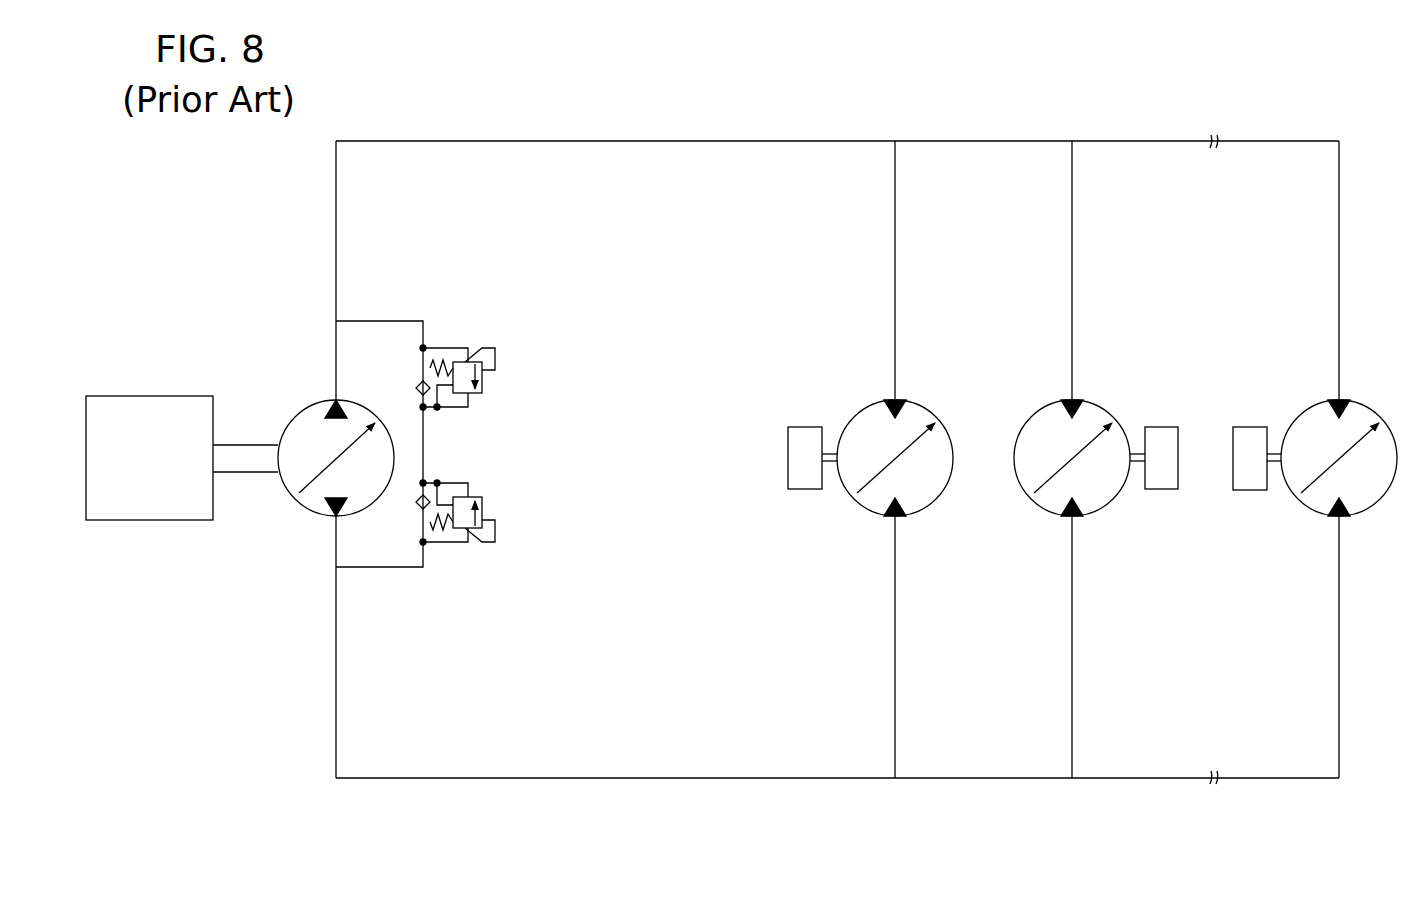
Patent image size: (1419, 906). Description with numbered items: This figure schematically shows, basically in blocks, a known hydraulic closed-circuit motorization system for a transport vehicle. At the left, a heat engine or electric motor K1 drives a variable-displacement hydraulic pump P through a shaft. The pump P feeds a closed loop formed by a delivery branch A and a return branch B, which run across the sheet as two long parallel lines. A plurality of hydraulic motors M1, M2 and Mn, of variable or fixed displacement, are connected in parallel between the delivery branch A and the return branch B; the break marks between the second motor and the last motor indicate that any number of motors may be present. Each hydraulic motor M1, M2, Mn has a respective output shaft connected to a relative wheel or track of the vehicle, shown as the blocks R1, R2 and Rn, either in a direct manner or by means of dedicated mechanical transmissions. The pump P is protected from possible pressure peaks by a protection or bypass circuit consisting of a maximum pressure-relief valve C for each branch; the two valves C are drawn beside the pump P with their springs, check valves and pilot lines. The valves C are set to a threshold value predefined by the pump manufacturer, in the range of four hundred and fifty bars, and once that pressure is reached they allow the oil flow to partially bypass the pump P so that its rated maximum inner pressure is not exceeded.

The delivery branch A is at (445, 776).
The return branch B is at (453, 142).
The heat engine or electric motor K1 is at (157, 410).
The variable-displacement hydraulic pump P is at (302, 492).
The maximum pressure-relief valve C is at (506, 377).
The hydraulic motor M1 is at (954, 358).
The hydraulic motor M2 is at (1123, 358).
The hydraulic motor Mn is at (1390, 356).
The first load / wheel R1 is at (798, 476).
The second load / wheel R2 is at (1160, 479).
The n-th load / wheel Rn is at (1246, 477).